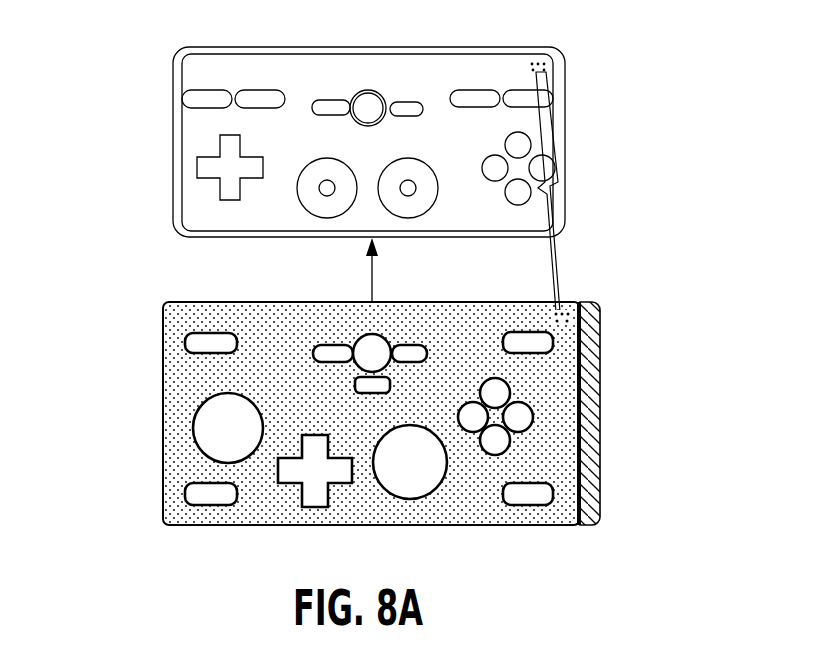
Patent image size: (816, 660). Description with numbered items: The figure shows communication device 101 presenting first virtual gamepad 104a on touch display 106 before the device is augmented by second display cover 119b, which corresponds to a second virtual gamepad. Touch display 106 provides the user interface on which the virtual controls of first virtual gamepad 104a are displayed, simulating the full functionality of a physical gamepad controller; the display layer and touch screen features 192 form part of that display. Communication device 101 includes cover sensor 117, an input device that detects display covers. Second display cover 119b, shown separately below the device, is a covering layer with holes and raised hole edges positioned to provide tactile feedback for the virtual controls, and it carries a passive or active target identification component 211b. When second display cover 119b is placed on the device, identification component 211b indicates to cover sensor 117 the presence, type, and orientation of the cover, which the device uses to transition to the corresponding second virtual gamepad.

The communication device 101 is at (166, 106).
The touch display 106 is at (200, 196).
The first virtual gamepad 104a is at (390, 90).
The shoulder buttons 192 is at (492, 80).
The cover sensor 117 is at (547, 67).
The target identification component 211b is at (574, 322).
The second display cover 119b is at (601, 462).